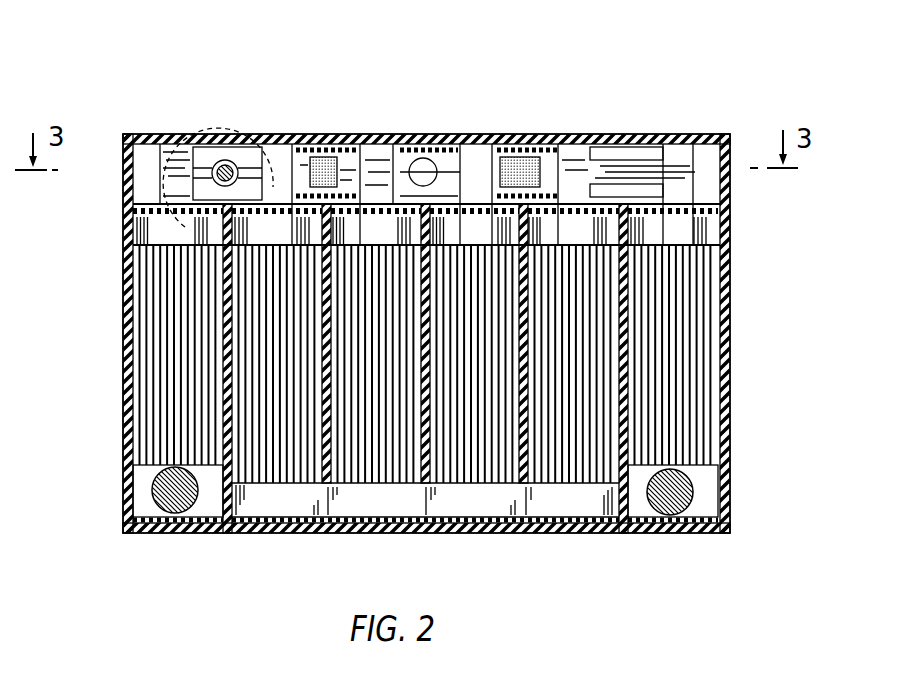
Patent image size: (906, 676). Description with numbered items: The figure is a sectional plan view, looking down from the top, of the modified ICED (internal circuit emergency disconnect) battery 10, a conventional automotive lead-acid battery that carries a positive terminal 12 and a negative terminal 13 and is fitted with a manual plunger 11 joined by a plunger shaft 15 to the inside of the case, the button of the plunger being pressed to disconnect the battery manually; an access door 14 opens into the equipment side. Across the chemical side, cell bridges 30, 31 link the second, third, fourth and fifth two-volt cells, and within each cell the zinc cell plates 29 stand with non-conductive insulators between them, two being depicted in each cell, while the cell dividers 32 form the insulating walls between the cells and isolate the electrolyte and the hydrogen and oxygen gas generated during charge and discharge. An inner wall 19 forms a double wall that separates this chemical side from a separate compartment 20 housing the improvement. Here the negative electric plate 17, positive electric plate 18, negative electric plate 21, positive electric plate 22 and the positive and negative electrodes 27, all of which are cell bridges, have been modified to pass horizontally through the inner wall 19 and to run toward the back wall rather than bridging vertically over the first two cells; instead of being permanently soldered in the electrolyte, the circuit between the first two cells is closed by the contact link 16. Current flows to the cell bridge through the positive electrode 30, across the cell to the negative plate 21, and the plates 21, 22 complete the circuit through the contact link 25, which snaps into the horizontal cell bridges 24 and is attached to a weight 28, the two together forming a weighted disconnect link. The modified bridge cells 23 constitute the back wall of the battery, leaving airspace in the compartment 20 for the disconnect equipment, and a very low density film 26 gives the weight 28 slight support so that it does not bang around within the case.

The battery 10 is at (770, 99).
The manual plunger 11 is at (246, 123).
The positive terminal 12 is at (180, 498).
The negative terminal 13 is at (678, 500).
The compartment or access door 14 is at (563, 134).
The plunger shaft 15 is at (210, 133).
The contact link 16 is at (201, 187).
The negative electric plate 17 is at (175, 138).
The positive electric plate 18 is at (283, 137).
The inner wall 19 is at (133, 182).
The compartment 20 is at (133, 138).
The negative electric plate 21 is at (358, 137).
The positive electric plate 22 is at (483, 134).
The modified bridge cells 23 is at (400, 135).
The horizontal cell bridges 24 is at (450, 134).
The contact link 25 is at (412, 132).
The very low density film 26 is at (547, 190).
The positive and negative electrodes 27 is at (681, 137).
The weight 28 is at (527, 134).
The cell plates 29 is at (190, 296).
The cell bridge 30 is at (292, 500).
The cell bridge 31 is at (577, 498).
The cell dividers 32 is at (622, 337).